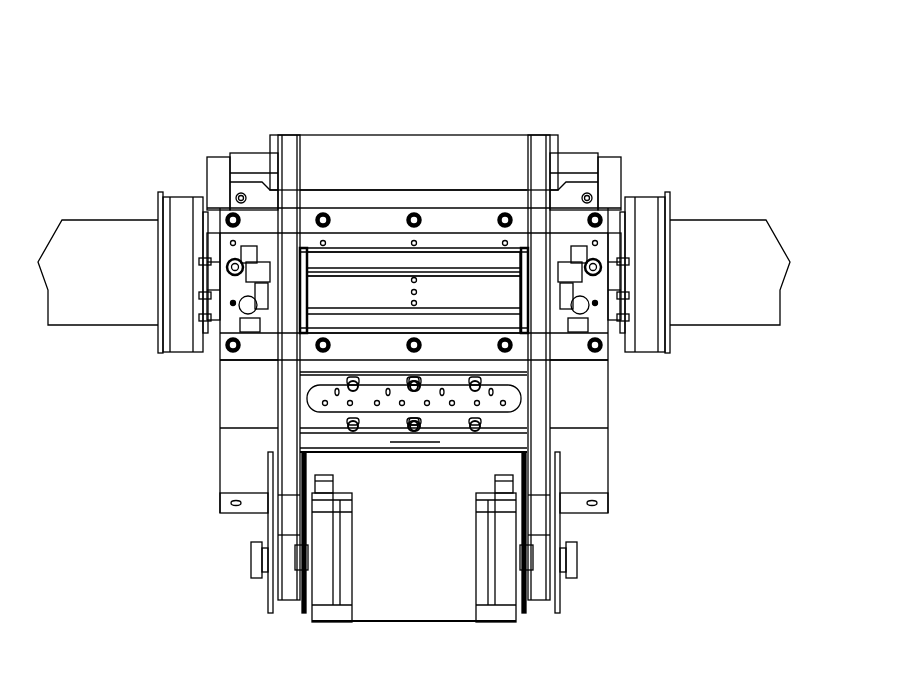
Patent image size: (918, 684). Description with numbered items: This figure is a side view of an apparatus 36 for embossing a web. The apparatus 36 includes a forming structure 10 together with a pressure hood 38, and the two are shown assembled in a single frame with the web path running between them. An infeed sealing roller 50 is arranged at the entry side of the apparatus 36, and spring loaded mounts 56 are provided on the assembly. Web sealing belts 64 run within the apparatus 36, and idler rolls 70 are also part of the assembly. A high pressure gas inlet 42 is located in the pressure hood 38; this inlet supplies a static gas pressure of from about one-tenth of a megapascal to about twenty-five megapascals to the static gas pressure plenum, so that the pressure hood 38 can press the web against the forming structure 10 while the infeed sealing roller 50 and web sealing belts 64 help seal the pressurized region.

The forming structure 10 is at (461, 200).
The apparatus 36 is at (636, 108).
The pressure hood 38 is at (418, 263).
The high pressure gas inlet 42 is at (400, 293).
The infeed sealing roller 50 is at (470, 298).
The spring loaded mounts 56 is at (233, 262).
The web sealing belts 64 is at (284, 135).
The idler rolls 70 is at (345, 158).